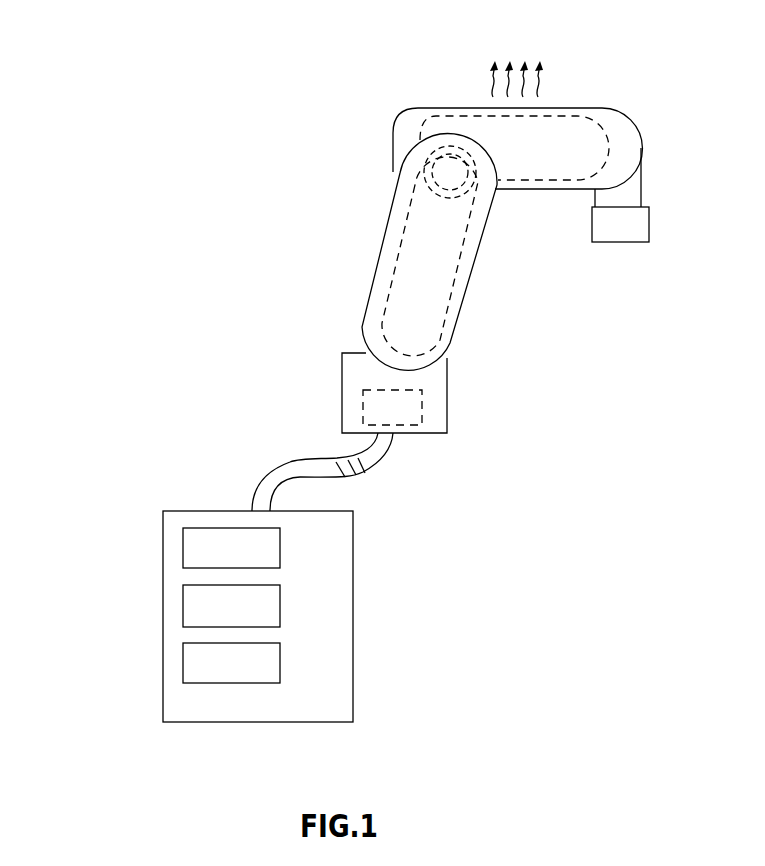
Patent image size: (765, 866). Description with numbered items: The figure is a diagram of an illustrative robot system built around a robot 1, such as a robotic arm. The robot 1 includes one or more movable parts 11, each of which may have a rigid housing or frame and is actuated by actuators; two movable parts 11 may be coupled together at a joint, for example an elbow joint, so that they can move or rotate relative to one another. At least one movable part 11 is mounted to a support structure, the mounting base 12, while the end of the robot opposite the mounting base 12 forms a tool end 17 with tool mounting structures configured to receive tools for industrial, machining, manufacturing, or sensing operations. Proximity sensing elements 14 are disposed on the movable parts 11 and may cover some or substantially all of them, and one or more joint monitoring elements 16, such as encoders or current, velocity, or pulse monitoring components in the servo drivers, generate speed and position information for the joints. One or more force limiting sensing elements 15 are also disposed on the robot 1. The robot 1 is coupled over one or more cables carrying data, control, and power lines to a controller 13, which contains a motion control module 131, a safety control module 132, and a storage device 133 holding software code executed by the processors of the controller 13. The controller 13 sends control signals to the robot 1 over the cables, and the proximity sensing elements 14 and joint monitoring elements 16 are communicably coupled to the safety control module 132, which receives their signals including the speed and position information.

The robot 1 is at (168, 105).
The movable part 11 is at (420, 235).
The mounting base 12 is at (355, 370).
The controller 13 is at (210, 517).
The motion control module 131 is at (207, 550).
The safety control module 132 is at (208, 612).
The storage device 133 is at (210, 668).
The proximity sensing element 14 is at (592, 197).
The force limiting sensing element 15 is at (623, 221).
The joint monitoring element 16 is at (450, 172).
The tool end 17 is at (645, 206).